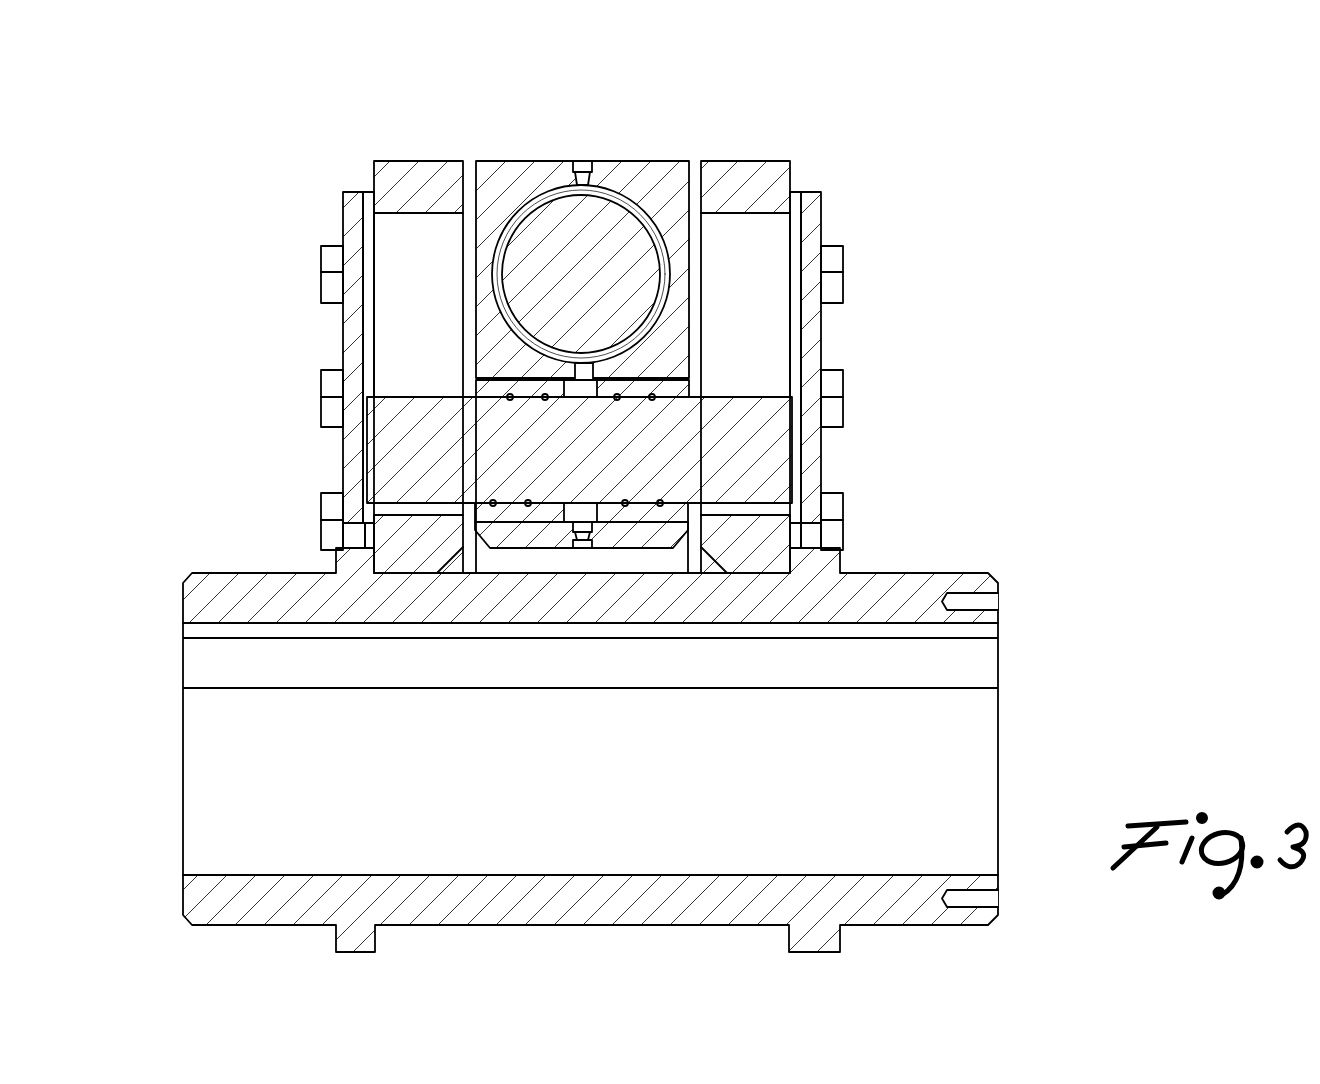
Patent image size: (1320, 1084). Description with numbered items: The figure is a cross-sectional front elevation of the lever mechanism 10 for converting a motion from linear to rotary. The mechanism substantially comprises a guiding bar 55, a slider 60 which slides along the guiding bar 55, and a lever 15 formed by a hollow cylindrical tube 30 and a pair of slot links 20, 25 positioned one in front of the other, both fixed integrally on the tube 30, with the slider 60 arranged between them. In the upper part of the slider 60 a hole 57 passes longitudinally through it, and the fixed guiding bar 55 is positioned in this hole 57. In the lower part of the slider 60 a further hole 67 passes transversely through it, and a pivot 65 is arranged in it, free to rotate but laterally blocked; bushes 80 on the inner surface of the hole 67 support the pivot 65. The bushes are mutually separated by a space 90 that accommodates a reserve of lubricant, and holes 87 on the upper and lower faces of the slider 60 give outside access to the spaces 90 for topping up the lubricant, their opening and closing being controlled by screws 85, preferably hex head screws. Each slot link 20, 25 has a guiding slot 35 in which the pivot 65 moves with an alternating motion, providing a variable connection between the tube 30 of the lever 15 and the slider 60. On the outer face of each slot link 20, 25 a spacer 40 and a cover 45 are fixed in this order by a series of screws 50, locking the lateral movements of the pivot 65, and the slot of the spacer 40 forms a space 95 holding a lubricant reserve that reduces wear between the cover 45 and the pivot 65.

The lever mechanism 10 is at (975, 206).
The lever 15 is at (291, 547).
The slot link 20 is at (750, 180).
The slot link 25 is at (412, 182).
The tube 30 is at (275, 755).
The guiding slot 35 is at (405, 308).
The spacer 40 is at (358, 188).
The cover 45 is at (352, 230).
The screws 50 is at (333, 288).
The guiding bar 55 is at (595, 242).
The hole 57 is at (667, 251).
The slider 60 is at (633, 172).
The pivot 65 is at (424, 463).
The hole 67 is at (511, 507).
The bushes 80 is at (515, 385).
The screws 85 is at (580, 165).
The holes 87 is at (592, 158).
The space 90 is at (520, 205).
The space 95 is at (369, 280).